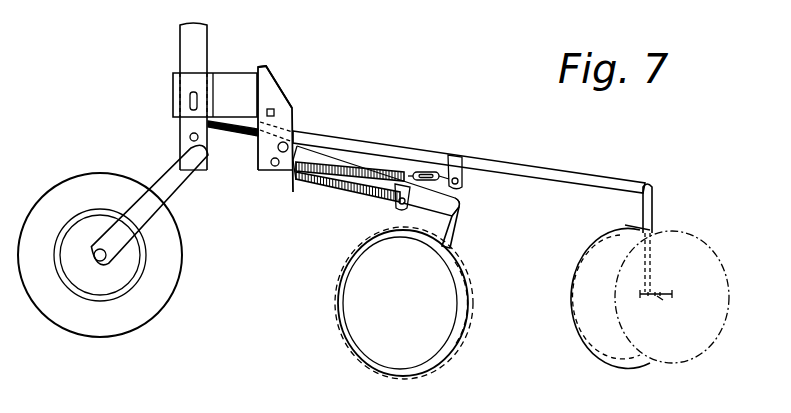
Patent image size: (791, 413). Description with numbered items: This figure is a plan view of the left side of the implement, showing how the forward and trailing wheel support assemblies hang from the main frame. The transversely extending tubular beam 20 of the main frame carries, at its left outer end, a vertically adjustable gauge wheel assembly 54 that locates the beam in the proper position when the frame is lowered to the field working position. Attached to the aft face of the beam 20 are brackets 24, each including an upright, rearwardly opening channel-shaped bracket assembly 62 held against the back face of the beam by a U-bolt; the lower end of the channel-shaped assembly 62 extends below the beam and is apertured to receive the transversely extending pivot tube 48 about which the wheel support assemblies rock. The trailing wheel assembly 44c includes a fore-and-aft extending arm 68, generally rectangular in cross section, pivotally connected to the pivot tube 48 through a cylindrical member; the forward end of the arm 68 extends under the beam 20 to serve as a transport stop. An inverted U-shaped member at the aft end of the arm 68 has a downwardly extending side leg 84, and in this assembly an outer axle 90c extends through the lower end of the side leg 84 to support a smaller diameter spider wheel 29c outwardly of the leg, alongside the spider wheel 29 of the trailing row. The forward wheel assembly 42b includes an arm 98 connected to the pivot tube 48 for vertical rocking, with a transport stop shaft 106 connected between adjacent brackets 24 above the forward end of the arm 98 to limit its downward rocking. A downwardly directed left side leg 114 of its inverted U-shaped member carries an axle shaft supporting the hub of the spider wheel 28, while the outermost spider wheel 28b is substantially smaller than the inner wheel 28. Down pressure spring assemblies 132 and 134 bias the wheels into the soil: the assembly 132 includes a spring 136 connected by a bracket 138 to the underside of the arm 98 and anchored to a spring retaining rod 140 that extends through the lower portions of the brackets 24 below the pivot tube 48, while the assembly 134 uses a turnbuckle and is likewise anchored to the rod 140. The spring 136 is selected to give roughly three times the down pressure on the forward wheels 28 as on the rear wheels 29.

The tubular beam 20 is at (237, 73).
The bracket 24 is at (296, 76).
The spider wheel 28 is at (466, 309).
The outermost spider wheel 28b is at (456, 346).
The spider wheel 29 is at (588, 246).
The smaller diameter spider wheel 29c is at (690, 235).
The forward wheel assembly 42b is at (346, 243).
The wheel assembly 44c is at (651, 156).
The pivot tube 48 is at (278, 147).
The gauge wheel assembly 54 is at (96, 134).
The channel-shaped bracket assembly 62 is at (267, 67).
The arm 68 is at (547, 170).
The side leg 84 is at (655, 211).
The outer axle 90c is at (660, 300).
The arm 98 is at (457, 198).
The transport stop shaft 106 is at (274, 112).
The left side leg 114 is at (448, 241).
The down pressure spring assembly 132 is at (331, 191).
The down pressure spring assembly 134 is at (379, 156).
The spring 136 is at (346, 197).
The bracket 138 is at (421, 168).
The spring retaining rod 140 is at (271, 168).